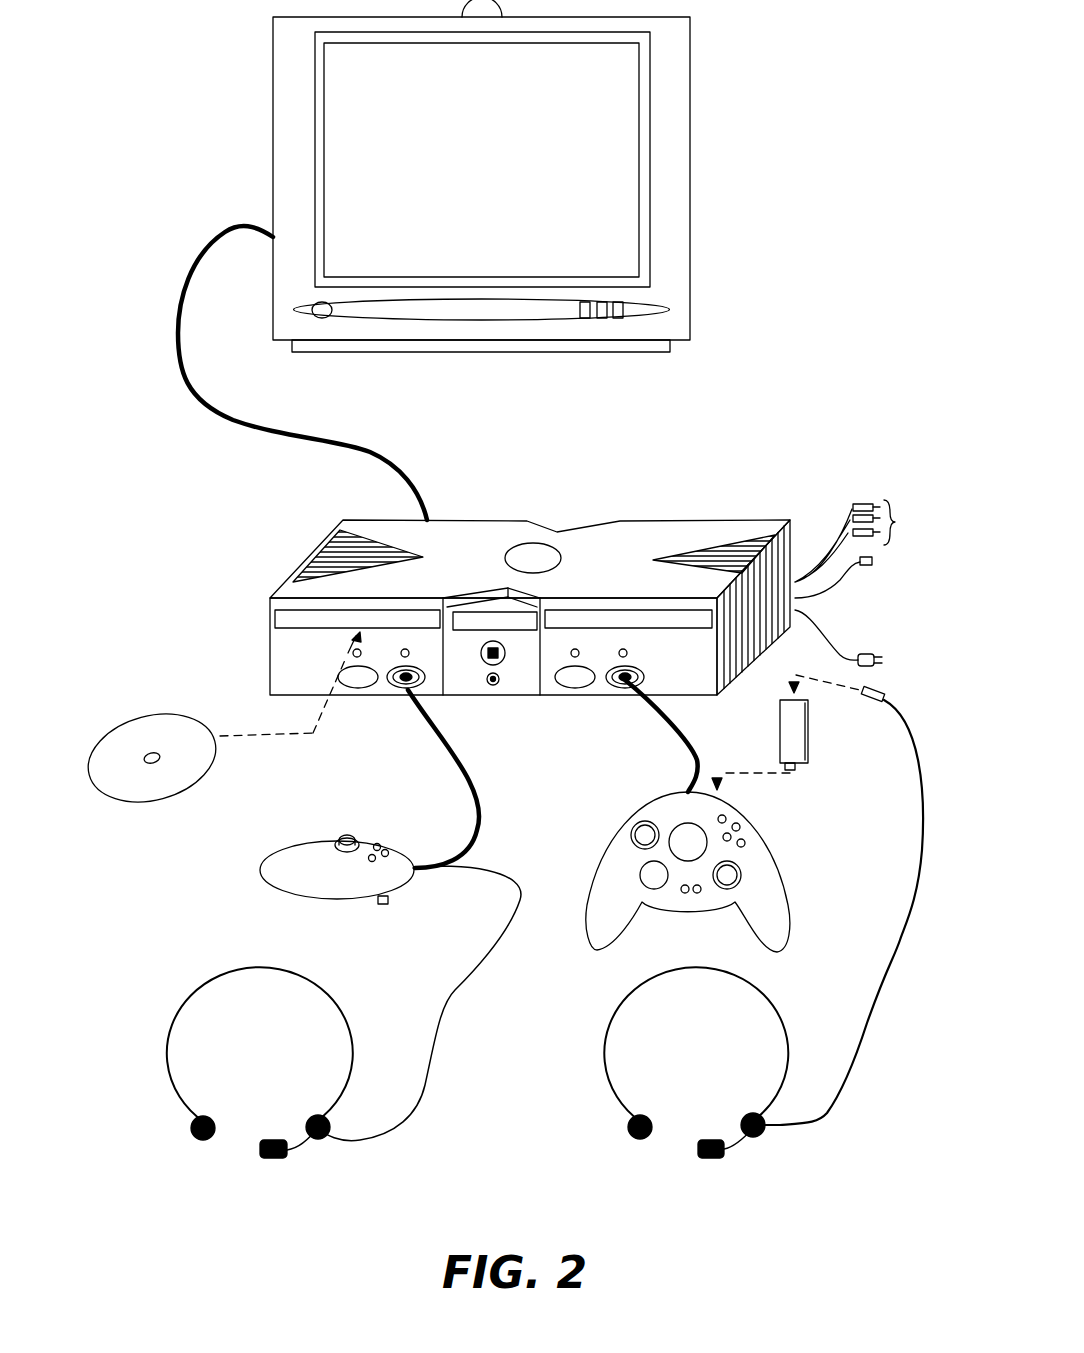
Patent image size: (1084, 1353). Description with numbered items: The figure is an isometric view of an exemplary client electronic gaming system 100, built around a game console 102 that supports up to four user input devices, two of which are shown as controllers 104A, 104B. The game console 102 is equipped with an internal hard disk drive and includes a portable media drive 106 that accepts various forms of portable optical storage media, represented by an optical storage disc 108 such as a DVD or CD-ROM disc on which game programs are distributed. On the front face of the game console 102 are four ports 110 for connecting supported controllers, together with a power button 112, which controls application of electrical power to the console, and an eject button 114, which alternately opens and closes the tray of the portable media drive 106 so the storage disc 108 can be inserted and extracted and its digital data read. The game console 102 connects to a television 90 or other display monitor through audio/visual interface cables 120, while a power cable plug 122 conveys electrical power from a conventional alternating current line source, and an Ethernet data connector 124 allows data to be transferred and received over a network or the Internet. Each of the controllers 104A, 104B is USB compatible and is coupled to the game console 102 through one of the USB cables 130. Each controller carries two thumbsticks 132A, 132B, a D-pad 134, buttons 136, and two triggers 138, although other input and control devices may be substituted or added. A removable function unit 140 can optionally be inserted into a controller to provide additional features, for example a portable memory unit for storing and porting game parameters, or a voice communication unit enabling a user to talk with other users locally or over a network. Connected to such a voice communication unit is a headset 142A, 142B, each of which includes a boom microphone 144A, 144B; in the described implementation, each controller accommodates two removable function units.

The television 90 is at (691, 138).
The electronic gaming system 100 is at (681, 437).
The game console 102 is at (387, 517).
The controller 104A is at (597, 950).
The controller 104B is at (338, 898).
The portable media drive 106 is at (285, 617).
The optical storage disc 108 is at (158, 798).
The ports 110 is at (406, 690).
The power button 112 is at (494, 686).
The eject button 114 is at (493, 641).
The audio/visual interface cables 120 is at (855, 505).
The power cable plug 122 is at (880, 652).
The Ethernet data connector 124 is at (835, 582).
The USB cables 130 is at (468, 784).
The thumbstick 132A is at (632, 835).
The thumbstick 132B is at (347, 836).
The D-pad 134 is at (640, 875).
The buttons 136 is at (740, 827).
The triggers 138 is at (390, 898).
The removable function unit 140 is at (808, 757).
The headset 142A is at (605, 1080).
The headset 142B is at (170, 1080).
The boom microphone 144A is at (710, 1158).
The boom microphone 144B is at (273, 1160).